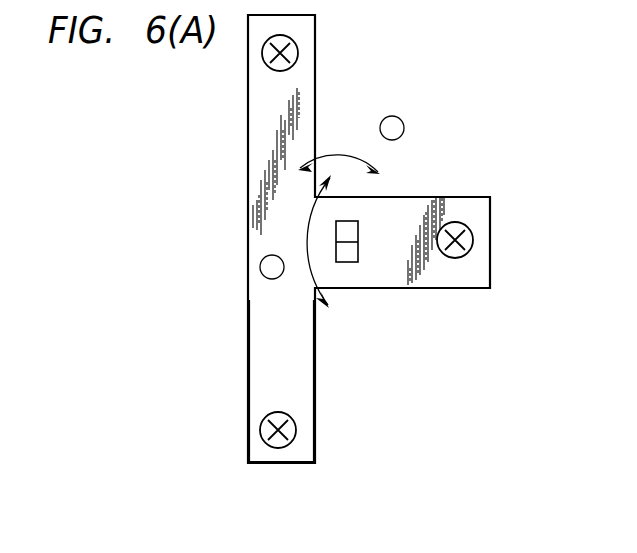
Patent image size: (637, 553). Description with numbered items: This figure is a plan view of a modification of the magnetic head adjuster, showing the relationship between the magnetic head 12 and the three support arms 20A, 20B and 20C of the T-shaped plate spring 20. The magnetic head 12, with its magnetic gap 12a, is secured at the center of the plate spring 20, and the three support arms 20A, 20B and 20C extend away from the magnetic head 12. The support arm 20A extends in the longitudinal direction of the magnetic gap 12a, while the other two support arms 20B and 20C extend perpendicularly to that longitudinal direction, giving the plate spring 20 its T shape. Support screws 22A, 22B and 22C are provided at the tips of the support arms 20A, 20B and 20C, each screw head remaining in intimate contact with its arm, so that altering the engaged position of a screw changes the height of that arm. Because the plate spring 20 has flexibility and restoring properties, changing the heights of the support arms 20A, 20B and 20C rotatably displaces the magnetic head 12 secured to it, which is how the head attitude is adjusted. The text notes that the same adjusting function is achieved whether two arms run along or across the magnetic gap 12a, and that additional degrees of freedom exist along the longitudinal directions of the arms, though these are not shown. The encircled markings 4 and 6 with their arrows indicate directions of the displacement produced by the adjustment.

The plate spring 20 is at (380, 191).
The support arm 20A is at (418, 288).
The support arm 20B is at (312, 384).
The support arm 20C is at (308, 103).
The support screw 22A is at (473, 238).
The support screw 22B is at (296, 432).
The support screw 22C is at (298, 52).
The magnetic head 12 is at (375, 273).
The magnetic gap 12a is at (358, 235).
The swing direction 4 is at (307, 263).
The pivot direction 6 is at (365, 160).